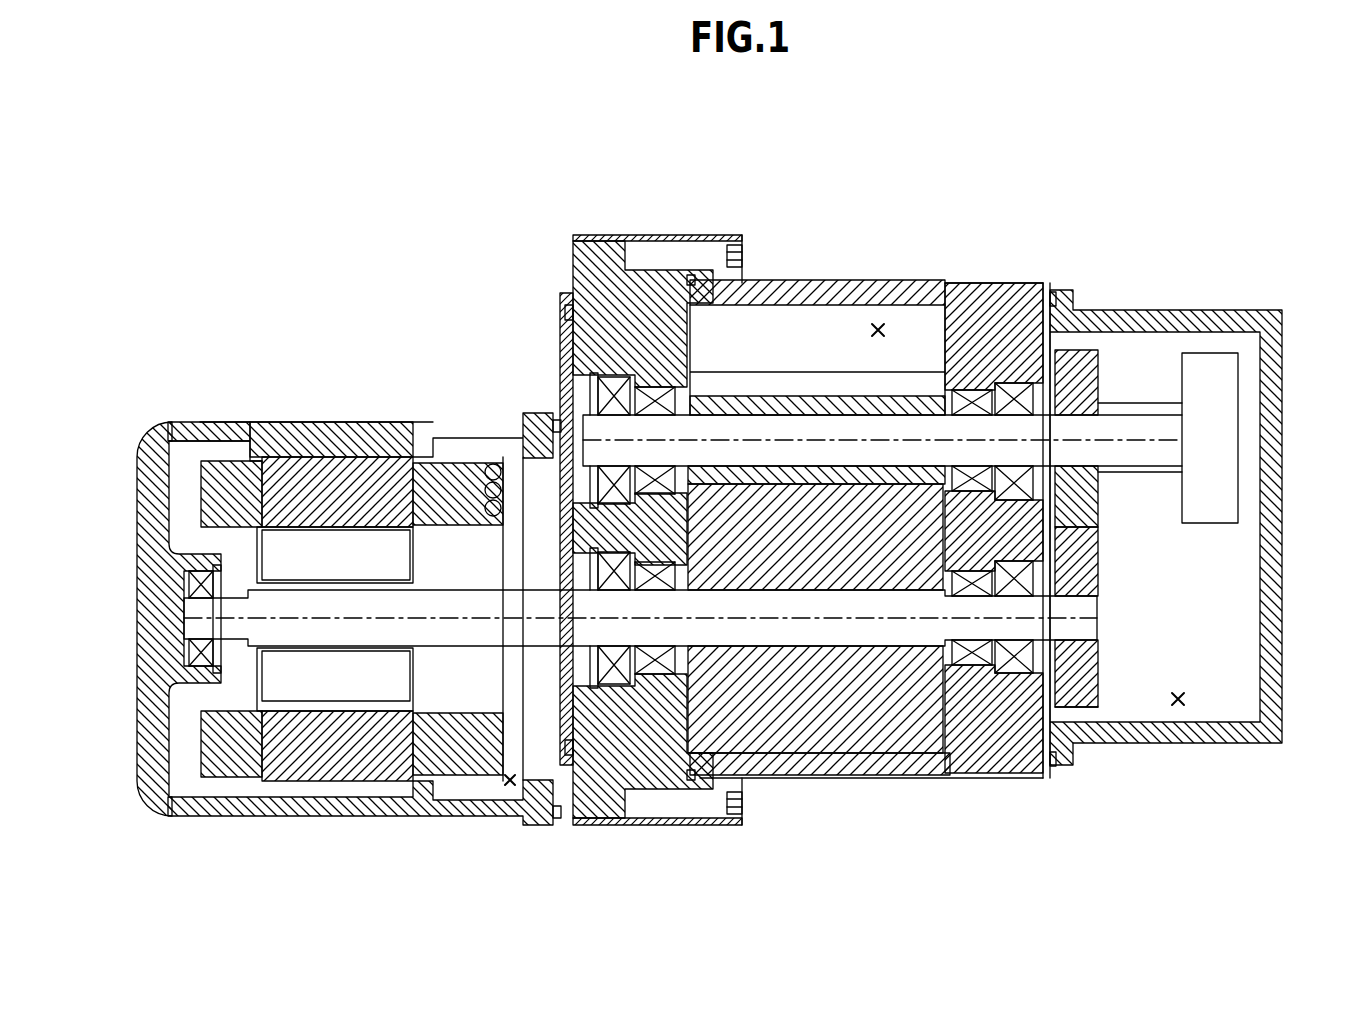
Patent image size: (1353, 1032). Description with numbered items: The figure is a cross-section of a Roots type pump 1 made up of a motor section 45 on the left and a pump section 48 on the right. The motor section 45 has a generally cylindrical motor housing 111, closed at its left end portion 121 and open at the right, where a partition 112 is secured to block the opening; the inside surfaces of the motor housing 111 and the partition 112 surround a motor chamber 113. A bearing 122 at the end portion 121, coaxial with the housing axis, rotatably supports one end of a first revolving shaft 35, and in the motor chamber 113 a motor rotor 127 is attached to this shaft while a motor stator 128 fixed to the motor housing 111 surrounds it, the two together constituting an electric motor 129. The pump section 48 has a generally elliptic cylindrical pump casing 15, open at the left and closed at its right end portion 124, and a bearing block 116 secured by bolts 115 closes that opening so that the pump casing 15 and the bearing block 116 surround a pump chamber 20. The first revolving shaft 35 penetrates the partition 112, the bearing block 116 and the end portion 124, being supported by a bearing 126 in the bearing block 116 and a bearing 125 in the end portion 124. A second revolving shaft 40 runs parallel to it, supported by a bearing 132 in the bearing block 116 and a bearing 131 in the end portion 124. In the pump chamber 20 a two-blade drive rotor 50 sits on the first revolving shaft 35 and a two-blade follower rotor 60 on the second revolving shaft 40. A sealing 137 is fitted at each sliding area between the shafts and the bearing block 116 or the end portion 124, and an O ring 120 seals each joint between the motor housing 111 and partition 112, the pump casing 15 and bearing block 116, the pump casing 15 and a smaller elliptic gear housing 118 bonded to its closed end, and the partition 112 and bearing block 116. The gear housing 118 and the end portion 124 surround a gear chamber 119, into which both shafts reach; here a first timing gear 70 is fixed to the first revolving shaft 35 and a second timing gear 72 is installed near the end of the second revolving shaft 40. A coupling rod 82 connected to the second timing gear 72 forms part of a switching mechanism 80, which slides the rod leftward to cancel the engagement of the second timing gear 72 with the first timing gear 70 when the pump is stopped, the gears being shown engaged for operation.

The motor unit 1 is at (1283, 176).
The pump casing 15 is at (1000, 778).
The pump chamber 20 is at (878, 322).
The first revolving shaft 35 is at (190, 632).
The second revolving shaft 40 is at (1172, 432).
The motor section 45 is at (137, 137).
The pump section 48 is at (1280, 137).
The drive rotor 50 is at (850, 735).
The follower rotor 60 is at (825, 382).
The first timing gear 70 is at (1095, 668).
The second timing gear 72 is at (1085, 515).
The switching mechanism 80 is at (1240, 472).
The coupling rod 82 is at (1135, 410).
The motor housing 111 is at (330, 422).
The partition 112 is at (560, 336).
The motor chamber 113 is at (510, 817).
The bolts 115 is at (725, 238).
The bearing block 116 is at (580, 238).
The gear housing 118 is at (1284, 612).
The gear chamber 119 is at (1180, 707).
The O ring 120 is at (563, 300).
The end portion of the motor housing 121 is at (150, 728).
The bearing 122 is at (189, 586).
The end portion of the pump casing 124 is at (1040, 553).
The bearing 125 is at (1020, 675).
The bearing 126 is at (598, 690).
The motor rotor 127 is at (365, 700).
The motor stator 128 is at (318, 783).
The electric motor 129 is at (295, 865).
The bearing 131 is at (1012, 383).
The bearing 132 is at (614, 372).
The sealing 137 is at (655, 385).